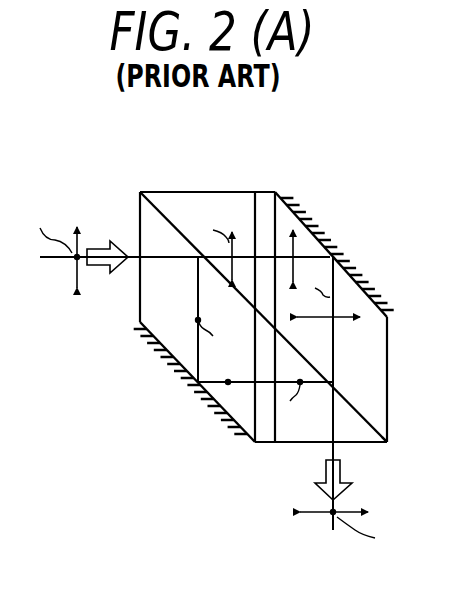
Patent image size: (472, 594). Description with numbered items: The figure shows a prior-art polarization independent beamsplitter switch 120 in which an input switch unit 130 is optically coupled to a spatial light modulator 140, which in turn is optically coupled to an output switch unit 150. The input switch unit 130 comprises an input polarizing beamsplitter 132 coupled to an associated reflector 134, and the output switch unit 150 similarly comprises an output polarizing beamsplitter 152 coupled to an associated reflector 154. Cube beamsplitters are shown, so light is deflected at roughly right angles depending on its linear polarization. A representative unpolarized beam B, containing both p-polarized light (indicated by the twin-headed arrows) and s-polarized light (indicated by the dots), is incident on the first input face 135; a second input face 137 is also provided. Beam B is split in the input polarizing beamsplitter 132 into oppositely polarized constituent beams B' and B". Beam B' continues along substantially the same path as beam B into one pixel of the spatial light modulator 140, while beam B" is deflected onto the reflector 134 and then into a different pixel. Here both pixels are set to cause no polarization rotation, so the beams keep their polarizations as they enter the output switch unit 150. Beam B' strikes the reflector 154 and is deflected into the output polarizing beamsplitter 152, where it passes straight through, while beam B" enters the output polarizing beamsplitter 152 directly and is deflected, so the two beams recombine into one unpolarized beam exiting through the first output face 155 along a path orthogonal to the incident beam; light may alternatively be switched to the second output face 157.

The polarization independent beamsplitter switch 120 is at (72, 141).
The input switch unit 130 is at (152, 283).
The input polarizing beamsplitter 132 is at (172, 198).
The reflector 134 is at (196, 404).
The first input face 135 is at (142, 232).
The second input face 137 is at (213, 192).
The spatial light modulator 140 is at (265, 192).
The output switch unit 150 is at (347, 288).
The output polarizing beamsplitter 152 is at (372, 362).
The reflector 154 is at (300, 213).
The first output face 155 is at (372, 445).
The second output face 157 is at (385, 428).